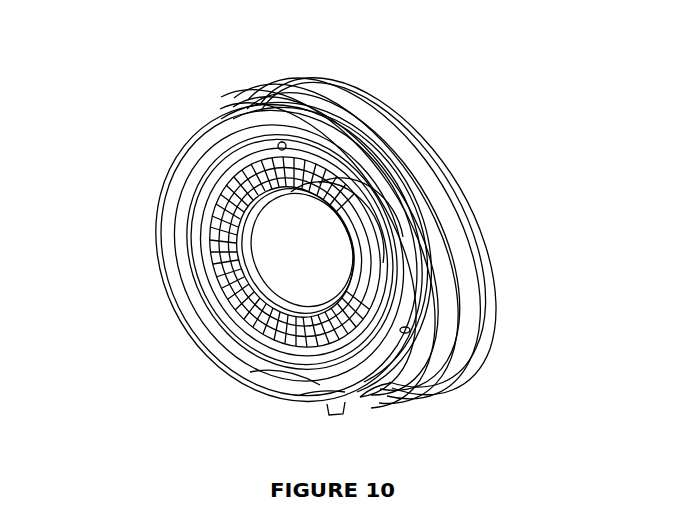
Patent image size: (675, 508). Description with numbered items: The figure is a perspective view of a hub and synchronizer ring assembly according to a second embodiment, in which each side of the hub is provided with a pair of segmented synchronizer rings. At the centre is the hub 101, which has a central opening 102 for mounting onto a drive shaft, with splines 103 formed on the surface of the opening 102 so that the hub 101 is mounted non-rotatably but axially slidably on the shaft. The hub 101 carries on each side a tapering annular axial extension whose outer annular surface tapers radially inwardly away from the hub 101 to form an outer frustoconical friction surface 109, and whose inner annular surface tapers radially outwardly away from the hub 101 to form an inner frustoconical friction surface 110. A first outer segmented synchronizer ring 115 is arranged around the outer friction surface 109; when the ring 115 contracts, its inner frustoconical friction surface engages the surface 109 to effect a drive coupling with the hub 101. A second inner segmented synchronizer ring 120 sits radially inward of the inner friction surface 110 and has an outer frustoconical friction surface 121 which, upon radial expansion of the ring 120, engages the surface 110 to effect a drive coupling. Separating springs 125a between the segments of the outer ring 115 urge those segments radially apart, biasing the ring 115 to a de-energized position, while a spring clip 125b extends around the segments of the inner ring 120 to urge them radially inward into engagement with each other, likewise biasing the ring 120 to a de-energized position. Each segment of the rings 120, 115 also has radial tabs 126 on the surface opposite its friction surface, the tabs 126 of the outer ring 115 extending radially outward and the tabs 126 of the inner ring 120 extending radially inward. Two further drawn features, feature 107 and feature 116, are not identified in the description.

The hub 101 is at (480, 230).
The central opening 102 is at (282, 277).
The splines 103 is at (300, 265).
The outer groove 107 is at (325, 118).
The outer frustoconical friction surface 109 is at (163, 182).
The inner frustoconical friction surface 110 is at (317, 384).
The first outer segmented synchronizer ring 115 is at (415, 375).
The bearing 116 is at (285, 388).
The second inner segmented synchronizer ring 120 is at (345, 392).
The outer frustoconical friction surface 121 is at (250, 322).
The separating springs 125a is at (408, 328).
The spring clip 125b is at (250, 360).
The radial tabs 126 is at (230, 128).